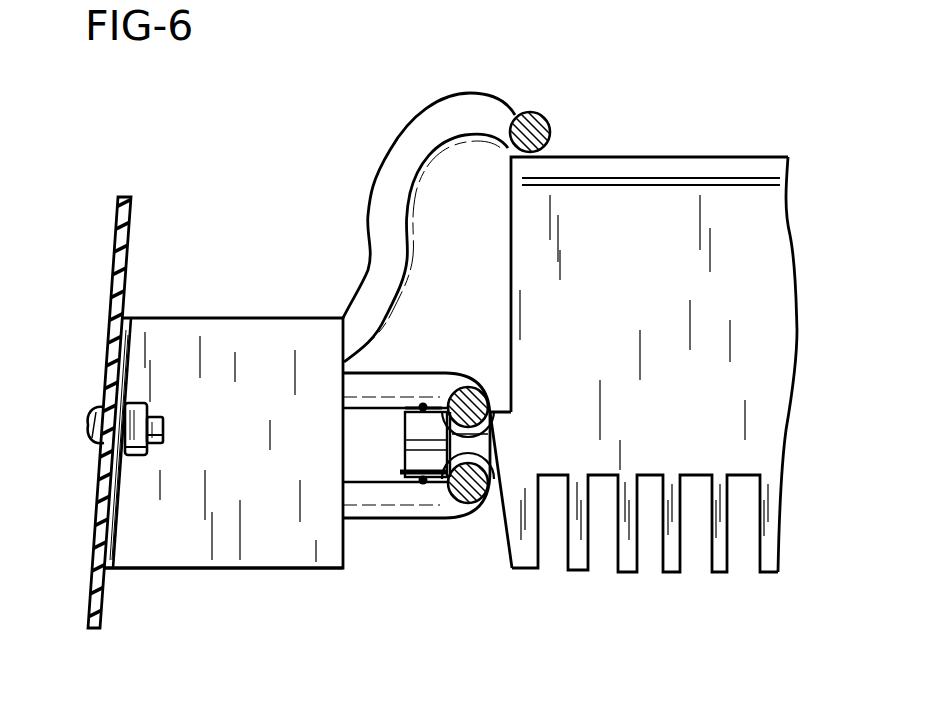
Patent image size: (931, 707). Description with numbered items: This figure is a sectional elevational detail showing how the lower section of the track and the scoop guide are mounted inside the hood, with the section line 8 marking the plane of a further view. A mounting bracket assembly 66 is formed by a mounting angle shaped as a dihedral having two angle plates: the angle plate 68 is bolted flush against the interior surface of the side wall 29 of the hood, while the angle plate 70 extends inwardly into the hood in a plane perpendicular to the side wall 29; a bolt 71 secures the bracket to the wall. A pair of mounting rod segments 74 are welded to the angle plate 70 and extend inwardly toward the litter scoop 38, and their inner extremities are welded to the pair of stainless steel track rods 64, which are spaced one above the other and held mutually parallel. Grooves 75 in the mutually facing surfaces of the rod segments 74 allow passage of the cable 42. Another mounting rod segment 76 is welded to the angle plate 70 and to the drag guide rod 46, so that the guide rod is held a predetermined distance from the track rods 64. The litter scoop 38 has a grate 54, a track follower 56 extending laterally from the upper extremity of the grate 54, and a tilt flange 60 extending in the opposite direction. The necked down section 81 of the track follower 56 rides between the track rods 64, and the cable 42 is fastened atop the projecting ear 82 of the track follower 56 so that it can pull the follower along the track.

The section line 8- 8 is at (445, 92).
The side wall of hood 29 is at (112, 281).
The litter scoop 38 is at (808, 333).
The cable 42 is at (405, 416).
The drag guide rod 46 is at (513, 110).
The grate 54 is at (768, 499).
The track follower 56 is at (498, 465).
The tilt flange 60 is at (676, 168).
The track rods 64 is at (483, 384).
The mounting bracket assembly 66 is at (230, 586).
The angle plate 68 is at (132, 342).
The angle plate 70 is at (257, 318).
The bolt 71 is at (89, 428).
The mounting rod segments 74 is at (380, 381).
The grooves 75 is at (425, 403).
The mounting rod segment 76 is at (390, 150).
The necked down section 81 is at (470, 437).
The projecting ear 82 is at (415, 437).